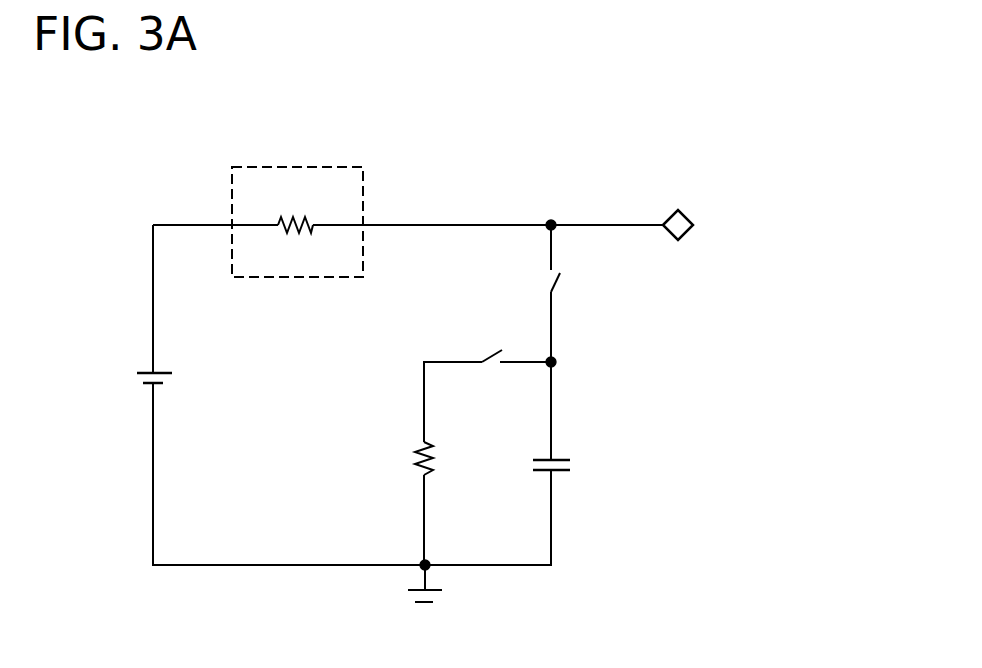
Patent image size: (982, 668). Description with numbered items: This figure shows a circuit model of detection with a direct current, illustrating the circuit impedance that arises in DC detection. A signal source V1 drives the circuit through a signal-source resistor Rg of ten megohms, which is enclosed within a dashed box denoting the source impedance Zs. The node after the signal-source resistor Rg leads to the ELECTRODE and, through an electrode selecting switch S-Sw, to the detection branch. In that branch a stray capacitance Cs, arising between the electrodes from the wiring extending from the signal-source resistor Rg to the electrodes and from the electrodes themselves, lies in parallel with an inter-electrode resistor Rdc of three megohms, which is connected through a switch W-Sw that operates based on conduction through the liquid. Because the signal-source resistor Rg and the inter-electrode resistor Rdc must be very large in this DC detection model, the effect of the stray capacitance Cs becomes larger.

The source impedance Zs is at (303, 167).
The signal-source resistor Rg is at (300, 225).
The signal source V1 is at (137, 380).
The electrode selecting switch S-Sw is at (598, 280).
The switch W-Sw is at (504, 341).
The inter-electrode resistor Rdc is at (382, 475).
The stray capacitance Cs is at (570, 464).
The electrode ELECTRODE is at (688, 213).